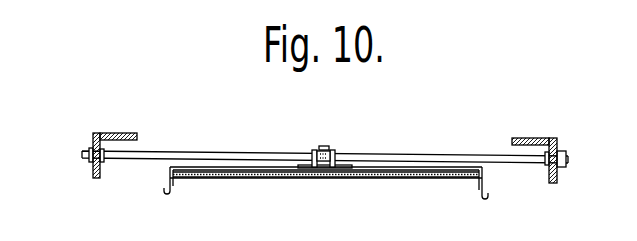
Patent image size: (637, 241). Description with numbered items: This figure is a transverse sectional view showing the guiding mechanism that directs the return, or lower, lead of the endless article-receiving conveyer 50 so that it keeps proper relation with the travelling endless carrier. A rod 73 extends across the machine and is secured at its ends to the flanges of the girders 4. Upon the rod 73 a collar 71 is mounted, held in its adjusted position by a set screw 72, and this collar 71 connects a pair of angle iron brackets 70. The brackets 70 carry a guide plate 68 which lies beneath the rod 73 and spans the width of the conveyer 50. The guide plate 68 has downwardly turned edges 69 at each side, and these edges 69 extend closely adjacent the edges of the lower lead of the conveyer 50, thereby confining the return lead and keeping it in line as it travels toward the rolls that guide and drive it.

The girders 4 is at (93, 138).
The article-receiving conveyer 50 is at (378, 178).
The guide plate 68 is at (430, 170).
The downwardly turned edges 69 is at (163, 189).
The angle iron brackets 70 is at (313, 152).
The collar 71 is at (325, 166).
The set screw 72 is at (323, 146).
The rod 73 is at (405, 160).